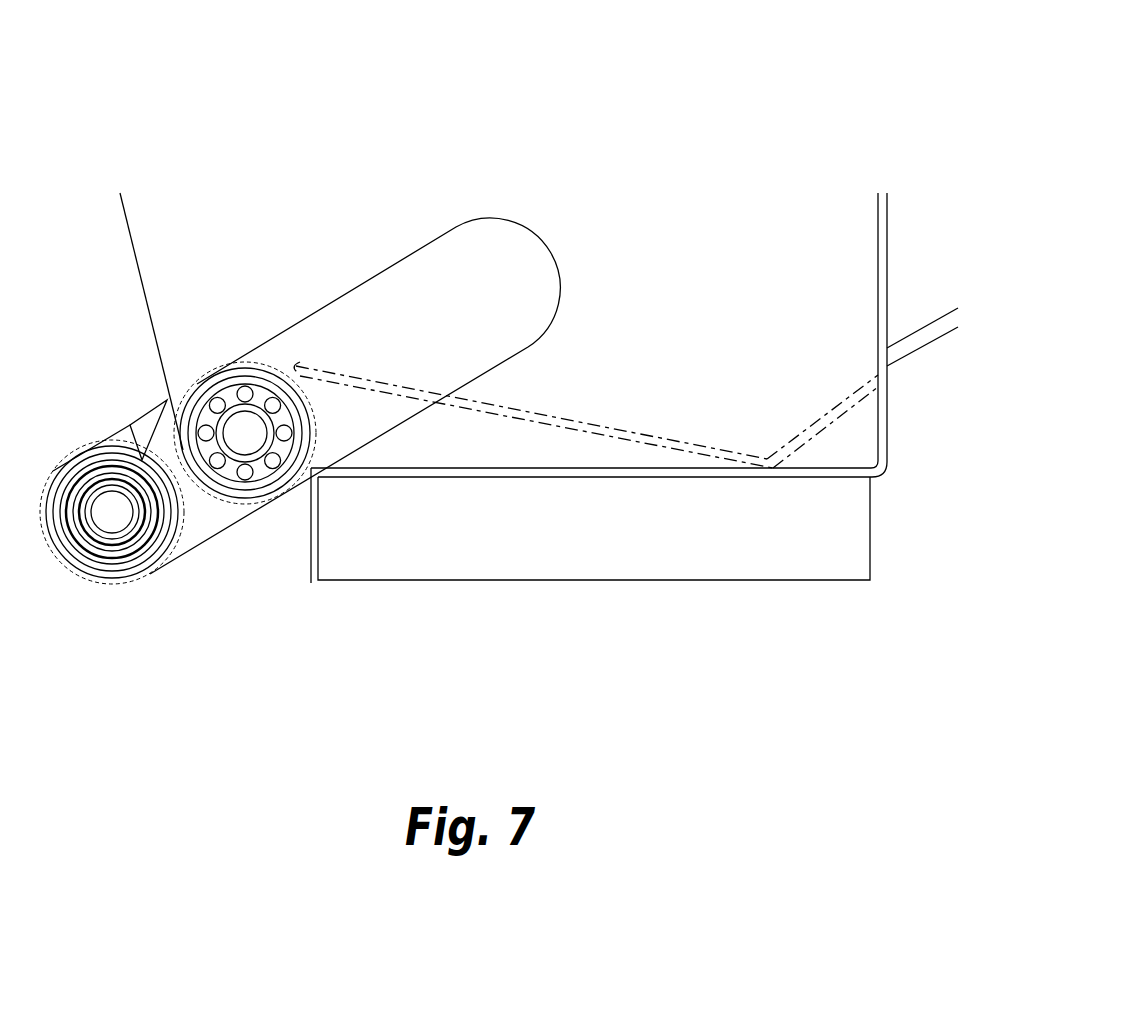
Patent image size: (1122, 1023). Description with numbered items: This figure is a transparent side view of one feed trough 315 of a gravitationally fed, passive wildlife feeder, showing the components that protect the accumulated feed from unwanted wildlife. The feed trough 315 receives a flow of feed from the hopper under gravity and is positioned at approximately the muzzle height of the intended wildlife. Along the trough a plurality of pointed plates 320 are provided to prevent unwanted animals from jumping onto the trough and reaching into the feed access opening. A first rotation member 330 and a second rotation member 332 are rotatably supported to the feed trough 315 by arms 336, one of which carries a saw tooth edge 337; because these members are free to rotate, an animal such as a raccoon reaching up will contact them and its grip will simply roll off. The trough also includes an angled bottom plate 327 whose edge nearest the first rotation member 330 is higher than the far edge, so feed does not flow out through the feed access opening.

The feed trough 315 is at (539, 245).
The pointed plate 320 is at (590, 525).
The bottom plate 327 is at (586, 398).
The first rotation member 330 is at (185, 392).
The second rotation member 332 is at (156, 536).
The arm 336 is at (306, 396).
The saw tooth edge 337 is at (117, 415).